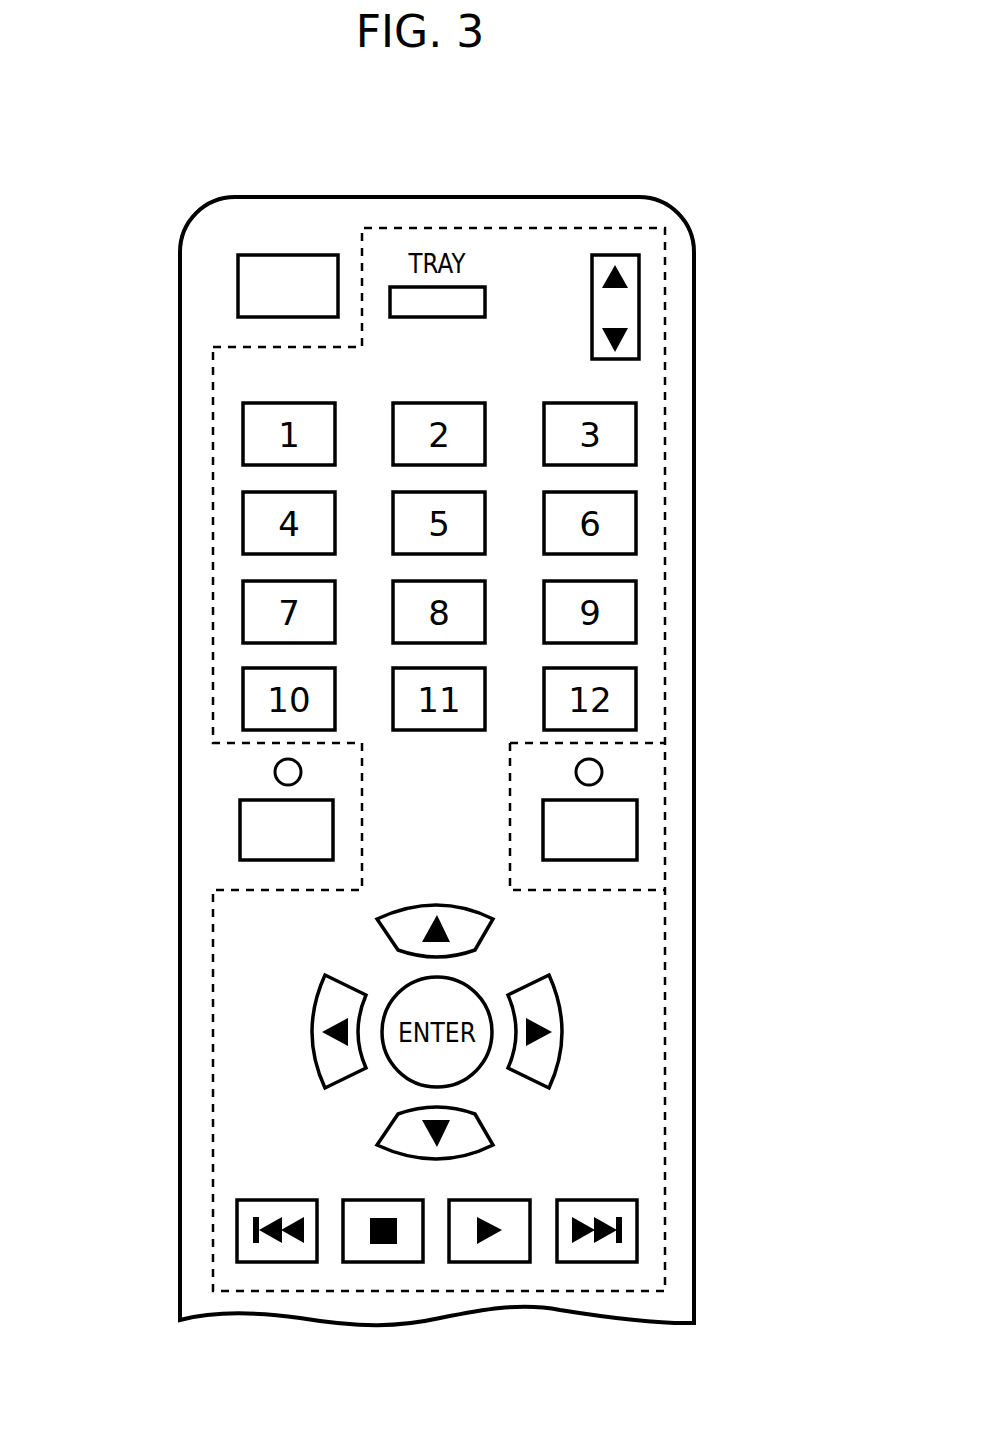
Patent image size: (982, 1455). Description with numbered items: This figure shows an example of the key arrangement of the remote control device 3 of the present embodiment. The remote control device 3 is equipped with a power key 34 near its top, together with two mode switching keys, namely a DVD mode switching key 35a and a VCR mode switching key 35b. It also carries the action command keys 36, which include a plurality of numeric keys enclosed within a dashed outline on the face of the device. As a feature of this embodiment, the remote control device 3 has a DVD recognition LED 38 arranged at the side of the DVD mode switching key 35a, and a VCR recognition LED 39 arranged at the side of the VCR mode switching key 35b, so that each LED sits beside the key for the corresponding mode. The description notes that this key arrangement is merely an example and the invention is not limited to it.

The remote control device 3 is at (696, 403).
The power key 34 is at (295, 255).
The action command keys 36 is at (664, 568).
The DVD recognition LED 38 is at (275, 772).
The VCR recognition LED 39 is at (603, 767).
The DVD mode switching key 35a is at (240, 825).
The VCR mode switching key 35b is at (637, 828).